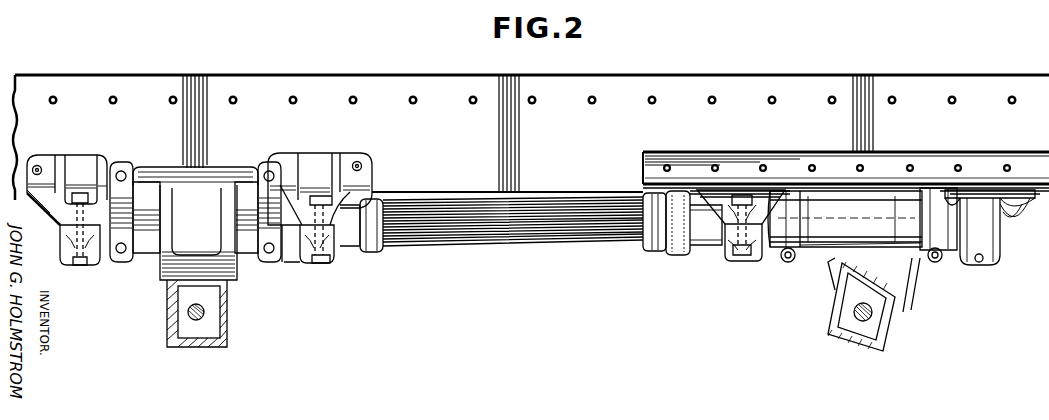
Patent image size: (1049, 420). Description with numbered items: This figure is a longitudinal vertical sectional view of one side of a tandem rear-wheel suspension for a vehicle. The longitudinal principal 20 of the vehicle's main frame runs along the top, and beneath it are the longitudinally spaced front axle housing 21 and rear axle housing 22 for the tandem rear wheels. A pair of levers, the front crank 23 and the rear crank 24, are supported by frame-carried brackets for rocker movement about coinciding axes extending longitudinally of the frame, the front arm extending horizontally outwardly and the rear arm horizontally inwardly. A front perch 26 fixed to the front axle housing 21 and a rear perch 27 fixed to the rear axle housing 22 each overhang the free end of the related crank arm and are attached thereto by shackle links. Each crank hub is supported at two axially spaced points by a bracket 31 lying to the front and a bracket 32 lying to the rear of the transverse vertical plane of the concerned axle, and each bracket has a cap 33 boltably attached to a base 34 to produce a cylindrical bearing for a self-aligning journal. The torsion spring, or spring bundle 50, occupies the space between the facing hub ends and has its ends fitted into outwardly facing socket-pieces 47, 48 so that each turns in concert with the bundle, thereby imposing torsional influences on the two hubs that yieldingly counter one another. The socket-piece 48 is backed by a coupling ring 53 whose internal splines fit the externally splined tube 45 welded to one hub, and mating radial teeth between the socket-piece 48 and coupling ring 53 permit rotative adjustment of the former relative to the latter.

The longitudinal principal of main frame 20 is at (693, 84).
The front axle housing 21 is at (228, 326).
The rear axle housing 22 is at (850, 345).
The front crank 23 is at (148, 258).
The rear crank 24 is at (815, 262).
The front perch 26 is at (218, 172).
The rear perch 27 is at (912, 272).
The front bracket 31 is at (30, 208).
The rear bracket 32 is at (374, 171).
The cap 33 is at (92, 260).
The base 34 is at (55, 222).
The externally splined tube 45 is at (712, 245).
The socket-piece 47 is at (374, 254).
The socket-piece 48 is at (652, 251).
The spring bundle 50 is at (524, 243).
The coupling ring 53 is at (677, 255).